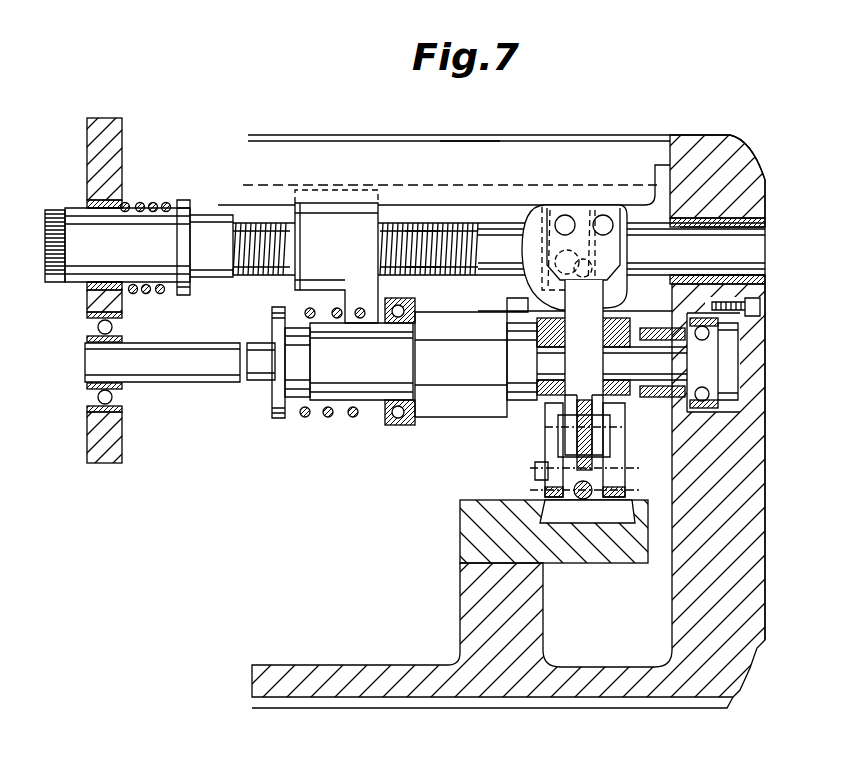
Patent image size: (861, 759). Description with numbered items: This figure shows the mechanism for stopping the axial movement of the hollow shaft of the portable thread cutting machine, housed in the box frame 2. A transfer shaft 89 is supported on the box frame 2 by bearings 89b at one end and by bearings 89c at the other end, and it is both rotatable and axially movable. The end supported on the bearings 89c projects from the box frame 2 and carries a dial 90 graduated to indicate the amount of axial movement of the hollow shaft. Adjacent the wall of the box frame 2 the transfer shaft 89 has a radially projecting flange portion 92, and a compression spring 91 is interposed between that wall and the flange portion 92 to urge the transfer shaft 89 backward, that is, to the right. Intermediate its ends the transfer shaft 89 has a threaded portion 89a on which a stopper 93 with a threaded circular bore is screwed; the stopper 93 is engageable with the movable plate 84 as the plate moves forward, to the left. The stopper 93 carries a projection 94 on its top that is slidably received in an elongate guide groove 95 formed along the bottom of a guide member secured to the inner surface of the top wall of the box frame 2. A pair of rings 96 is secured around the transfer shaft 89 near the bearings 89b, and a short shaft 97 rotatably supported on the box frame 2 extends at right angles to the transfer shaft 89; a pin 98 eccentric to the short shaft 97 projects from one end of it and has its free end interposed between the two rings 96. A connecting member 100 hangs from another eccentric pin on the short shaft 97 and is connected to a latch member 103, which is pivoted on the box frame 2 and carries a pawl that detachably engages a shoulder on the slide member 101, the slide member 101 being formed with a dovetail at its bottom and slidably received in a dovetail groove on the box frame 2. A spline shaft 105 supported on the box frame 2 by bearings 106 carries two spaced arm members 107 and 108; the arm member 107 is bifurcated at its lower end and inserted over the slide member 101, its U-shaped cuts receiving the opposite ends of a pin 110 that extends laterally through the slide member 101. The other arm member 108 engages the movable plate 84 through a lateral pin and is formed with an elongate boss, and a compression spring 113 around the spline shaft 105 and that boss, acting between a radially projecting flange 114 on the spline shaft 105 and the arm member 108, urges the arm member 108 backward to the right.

The box frame 2 is at (115, 148).
The movable plate 84 is at (507, 305).
The transfer shaft 89 is at (468, 223).
The threaded portion 89a is at (412, 225).
The bearings 89b is at (747, 217).
The bearings 89c is at (88, 205).
The dial 90 is at (50, 235).
The compression spring 91 is at (142, 203).
The flange portion 92 is at (185, 200).
The stopper 93 is at (372, 218).
The projection 94 is at (358, 182).
The guide groove 95 is at (458, 152).
The rings 96 is at (527, 200).
The short shaft 97 is at (550, 200).
The pin 98 is at (590, 200).
The connecting member 100 is at (597, 383).
The slide member 101 is at (553, 510).
The latch member 103 is at (593, 453).
The spline shaft 105 is at (292, 402).
The bearings 106 is at (728, 408).
The arm member 107 is at (627, 450).
The arm member 108 is at (437, 412).
The pin 110 is at (540, 472).
The compression spring 113 is at (330, 412).
The flange 114 is at (277, 397).